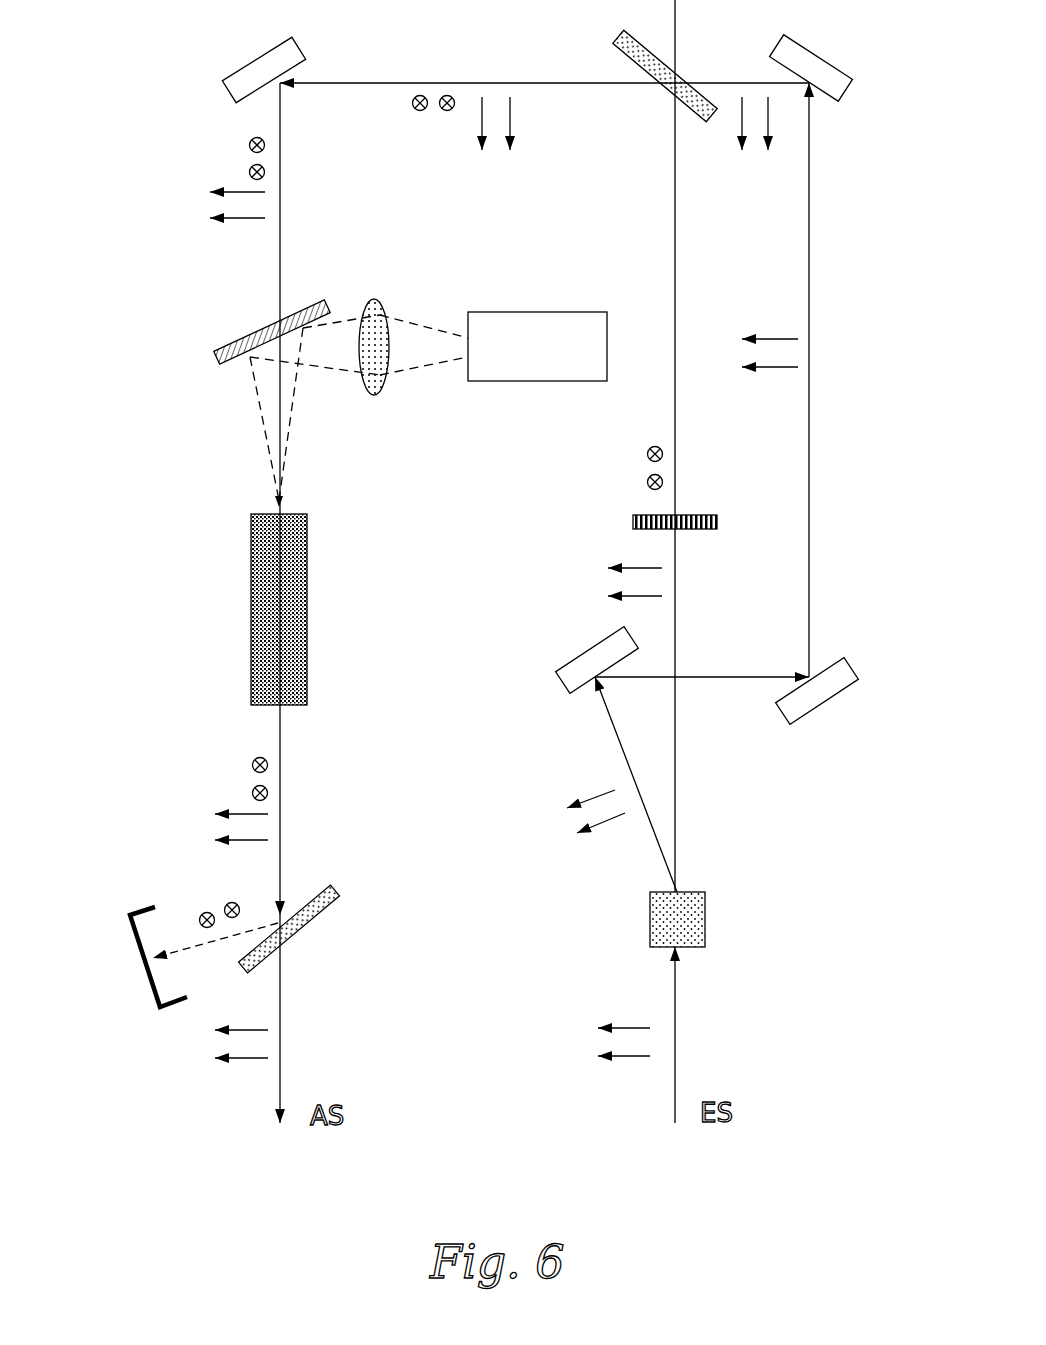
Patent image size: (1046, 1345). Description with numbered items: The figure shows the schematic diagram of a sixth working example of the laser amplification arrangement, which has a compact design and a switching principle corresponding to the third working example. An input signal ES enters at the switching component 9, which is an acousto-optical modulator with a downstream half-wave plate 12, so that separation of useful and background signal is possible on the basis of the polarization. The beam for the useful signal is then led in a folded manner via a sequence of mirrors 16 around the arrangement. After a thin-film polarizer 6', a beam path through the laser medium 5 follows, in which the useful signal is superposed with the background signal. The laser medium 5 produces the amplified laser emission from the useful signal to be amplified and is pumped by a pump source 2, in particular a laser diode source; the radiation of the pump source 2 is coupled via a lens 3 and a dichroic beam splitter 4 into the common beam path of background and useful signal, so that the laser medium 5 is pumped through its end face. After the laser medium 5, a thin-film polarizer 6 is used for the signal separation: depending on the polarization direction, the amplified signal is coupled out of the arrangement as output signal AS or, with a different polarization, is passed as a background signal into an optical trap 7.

The pump source 2 is at (551, 325).
The lens 3 is at (420, 332).
The dichroic beam splitter 4 is at (251, 332).
The laser medium 5 is at (335, 609).
The thin-film polarizer 6 is at (330, 929).
The thin-film polarizer 6' is at (606, 71).
The optical trap 7 is at (116, 944).
The switching component 9 is at (731, 915).
The half-wave plate 12 is at (708, 506).
The mirrors 16 is at (530, 390).